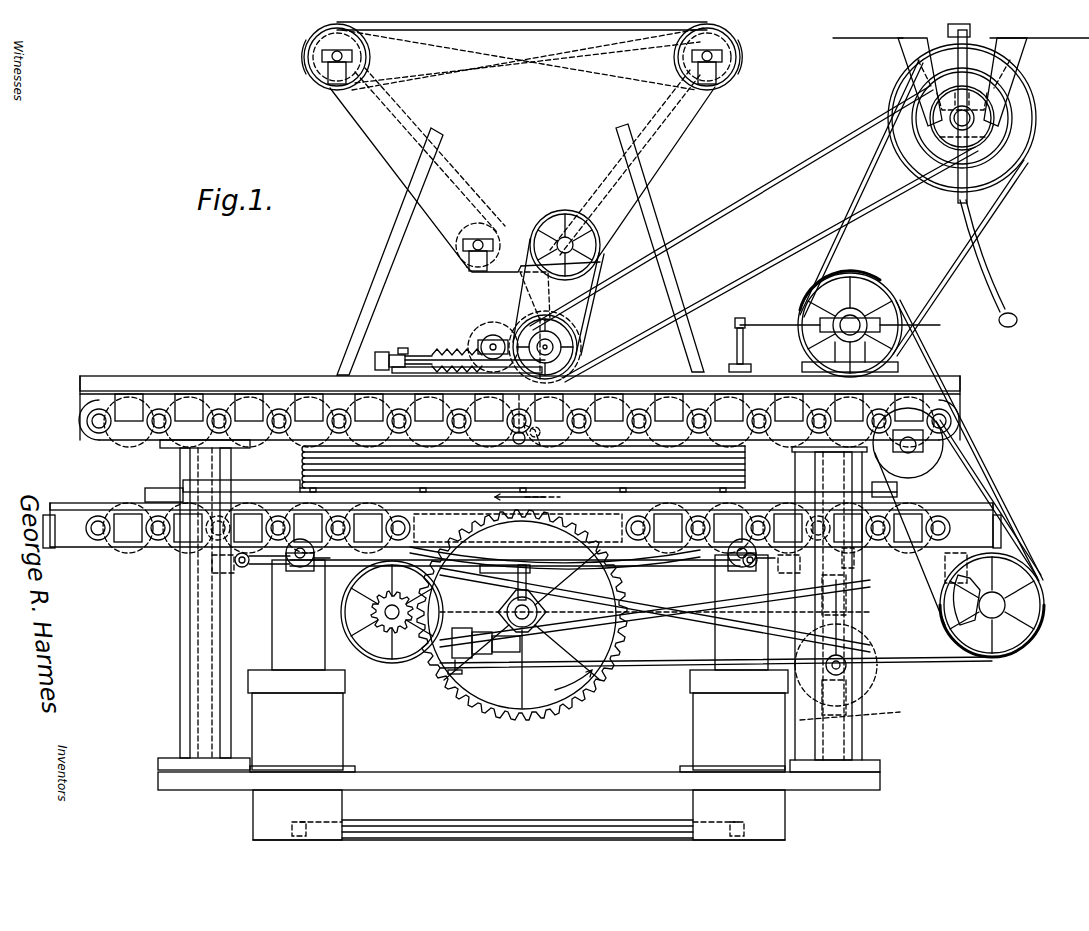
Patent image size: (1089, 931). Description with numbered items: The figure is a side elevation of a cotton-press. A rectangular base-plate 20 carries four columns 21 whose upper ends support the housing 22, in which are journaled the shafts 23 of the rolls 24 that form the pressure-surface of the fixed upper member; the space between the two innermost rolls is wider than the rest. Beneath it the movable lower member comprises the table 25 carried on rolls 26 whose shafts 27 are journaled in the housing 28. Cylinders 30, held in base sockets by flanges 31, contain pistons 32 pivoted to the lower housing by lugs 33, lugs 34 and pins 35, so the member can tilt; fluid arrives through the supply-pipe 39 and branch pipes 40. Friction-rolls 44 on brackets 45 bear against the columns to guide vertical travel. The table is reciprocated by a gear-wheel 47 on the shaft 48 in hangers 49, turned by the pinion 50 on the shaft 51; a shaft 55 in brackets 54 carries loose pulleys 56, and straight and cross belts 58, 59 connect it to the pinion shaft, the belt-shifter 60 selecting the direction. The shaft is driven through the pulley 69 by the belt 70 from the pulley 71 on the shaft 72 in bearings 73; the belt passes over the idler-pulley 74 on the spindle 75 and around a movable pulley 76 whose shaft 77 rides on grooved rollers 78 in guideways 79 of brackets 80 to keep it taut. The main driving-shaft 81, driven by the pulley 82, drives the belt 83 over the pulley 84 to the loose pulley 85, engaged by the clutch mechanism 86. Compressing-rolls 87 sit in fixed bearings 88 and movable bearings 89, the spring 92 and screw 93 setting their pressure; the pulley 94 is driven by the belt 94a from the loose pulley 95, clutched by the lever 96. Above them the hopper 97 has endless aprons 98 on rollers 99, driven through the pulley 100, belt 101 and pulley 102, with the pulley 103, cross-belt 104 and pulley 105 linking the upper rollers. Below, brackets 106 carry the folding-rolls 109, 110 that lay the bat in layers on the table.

The base-plate 20 is at (568, 790).
The columns 21 is at (180, 646).
The housing 22 is at (228, 382).
The shafts 23 is at (92, 426).
The rolls 24 is at (80, 420).
The table 25 is at (258, 490).
The rolls 26 is at (97, 503).
The shafts 27 is at (98, 540).
The housing 28 is at (43, 528).
The cylinders 30 is at (518, 720).
The flanges 31 is at (355, 768).
The pistons 32 is at (520, 612).
The lugs 33 is at (486, 577).
The lugs 34 is at (300, 572).
The pins 35 is at (552, 568).
The supply-pipe 39 is at (436, 824).
The branch pipes 40 is at (305, 825).
The friction-rolls 44 is at (526, 571).
The brackets 45 is at (516, 555).
The gear-wheel 47 is at (615, 630).
The shaft 48 is at (540, 608).
The hangers 49 is at (478, 563).
The pinion 50 is at (392, 633).
The shaft 51 is at (375, 625).
The brackets 54 is at (960, 585).
The shaft 55 is at (1010, 605).
The loose pulleys 56 is at (1022, 642).
The straight belt 58 is at (660, 668).
The cross belt 59 is at (648, 615).
The belt-shifter 60 is at (468, 660).
The pulley 69 is at (1005, 560).
The belt 70 is at (930, 342).
The pulley 71 is at (880, 290).
The shaft 72 is at (853, 318).
The bearings 73 is at (884, 350).
The idler-pulley 74 is at (908, 443).
The spindle 75 is at (902, 454).
The movable pulley 76 is at (870, 675).
The shaft 77 is at (838, 684).
The grooved rollers 78 is at (801, 606).
The guideways 79 is at (863, 717).
The brackets 80 is at (812, 732).
The main driving-shaft 81 is at (975, 123).
The pulley 82 is at (1020, 160).
The belt 83 is at (868, 170).
The pulley 84 is at (912, 100).
The loose pulley 85 is at (852, 275).
The clutch mechanism 86 is at (1005, 314).
The compressing-rolls 87 is at (485, 330).
The fixed bearings 88 is at (556, 347).
The movable bearings 89 is at (481, 345).
The spring 92 is at (440, 350).
The screw 93 is at (400, 350).
The pulley 94 is at (560, 316).
The belt 94a is at (754, 234).
The loose pulley 95 is at (995, 115).
The lever 96 is at (970, 240).
The hopper 97 is at (585, 190).
The endless aprons 98 is at (400, 165).
The rollers 99 is at (318, 53).
The pulley 100 is at (580, 240).
The belt 101 is at (590, 292).
The pulley 102 is at (578, 352).
The pulley 103 is at (728, 80).
The cross-belt 104 is at (522, 56).
The pulley 105 is at (310, 80).
The brackets 106 is at (522, 473).
The folding-roll 109 is at (507, 419).
The folding-roll 110 is at (543, 420).